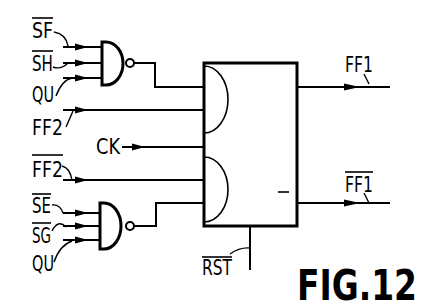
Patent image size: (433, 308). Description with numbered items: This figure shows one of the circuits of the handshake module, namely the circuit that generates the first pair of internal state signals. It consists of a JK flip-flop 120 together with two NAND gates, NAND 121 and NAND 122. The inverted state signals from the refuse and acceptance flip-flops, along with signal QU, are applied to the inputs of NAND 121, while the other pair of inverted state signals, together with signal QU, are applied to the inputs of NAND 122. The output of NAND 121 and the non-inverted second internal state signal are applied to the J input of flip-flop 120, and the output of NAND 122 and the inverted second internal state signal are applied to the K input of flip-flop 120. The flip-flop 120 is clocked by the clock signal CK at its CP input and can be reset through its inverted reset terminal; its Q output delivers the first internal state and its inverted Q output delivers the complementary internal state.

The flip-flop 120 is at (283, 147).
The NAND 121 is at (108, 62).
The NAND 122 is at (110, 217).